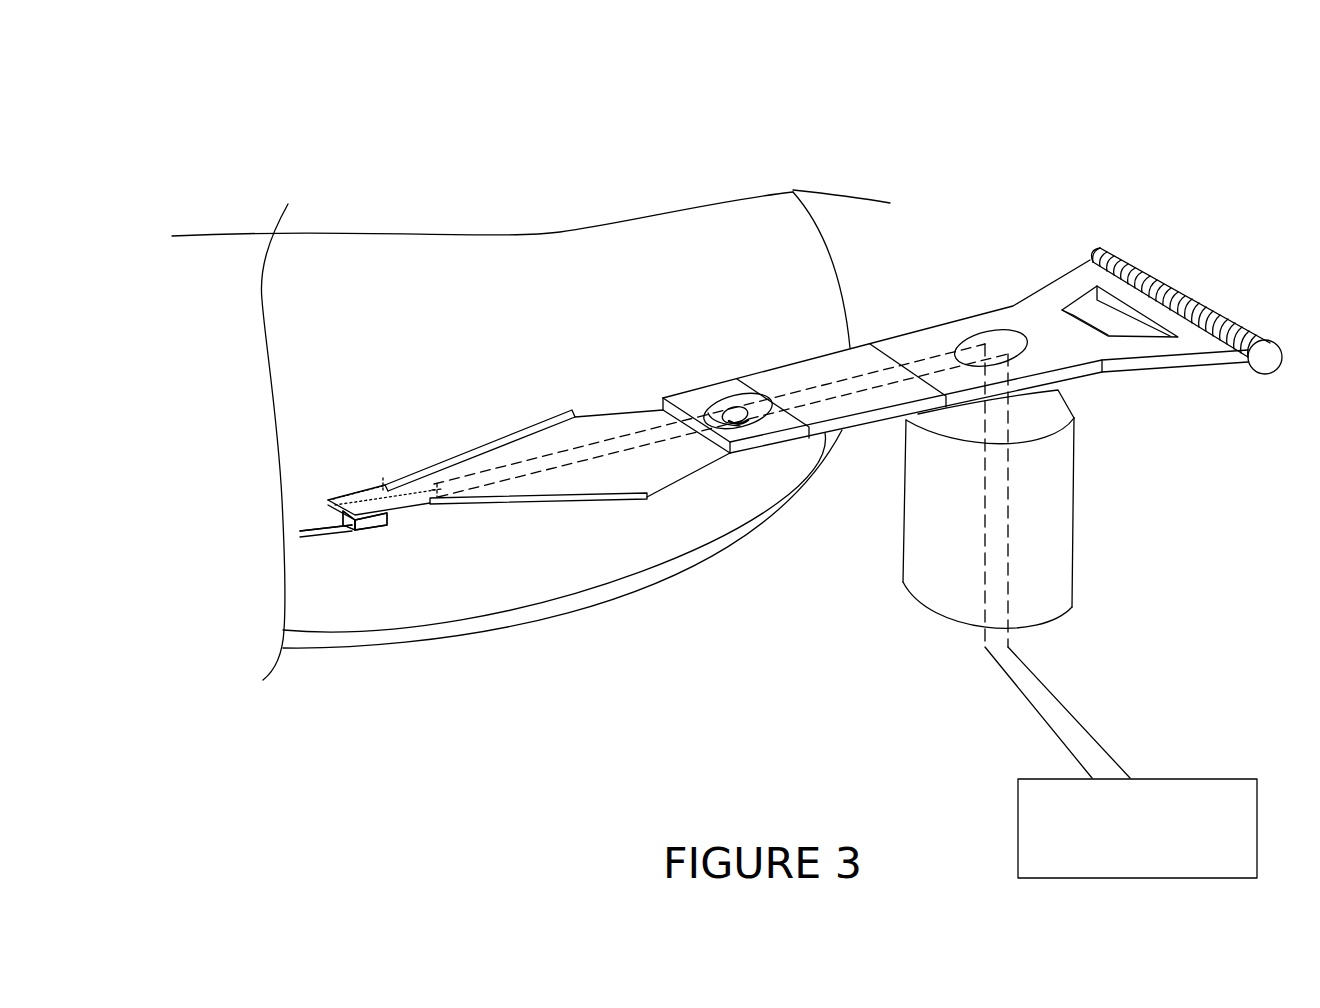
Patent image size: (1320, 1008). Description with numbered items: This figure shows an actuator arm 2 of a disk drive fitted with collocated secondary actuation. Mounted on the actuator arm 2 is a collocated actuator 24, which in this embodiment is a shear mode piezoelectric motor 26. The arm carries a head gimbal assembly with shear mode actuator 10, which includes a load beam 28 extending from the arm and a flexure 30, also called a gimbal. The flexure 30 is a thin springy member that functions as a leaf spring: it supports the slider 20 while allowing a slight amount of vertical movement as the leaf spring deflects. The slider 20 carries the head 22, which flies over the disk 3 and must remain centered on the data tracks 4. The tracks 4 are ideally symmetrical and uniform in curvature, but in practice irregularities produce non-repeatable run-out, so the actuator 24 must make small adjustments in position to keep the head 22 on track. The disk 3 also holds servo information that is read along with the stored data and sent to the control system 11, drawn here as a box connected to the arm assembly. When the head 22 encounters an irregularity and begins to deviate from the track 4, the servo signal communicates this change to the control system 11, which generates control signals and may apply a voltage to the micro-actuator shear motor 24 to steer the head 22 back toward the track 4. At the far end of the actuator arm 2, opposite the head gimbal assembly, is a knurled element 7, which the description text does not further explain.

The actuator arm 2 is at (858, 384).
The disk 3 is at (442, 578).
The data track 4 is at (283, 537).
The voice coil motor 7 is at (1143, 261).
The head gimbal assembly with shear mode actuator 10 is at (445, 321).
The control system 11 is at (1150, 787).
The slider 20 is at (330, 520).
The head 22 is at (330, 522).
The collocated actuator 24 is at (330, 515).
The shear mode piezoelectric motor 26 is at (366, 454).
The load beam 28 is at (400, 490).
The flexure 30 is at (383, 485).